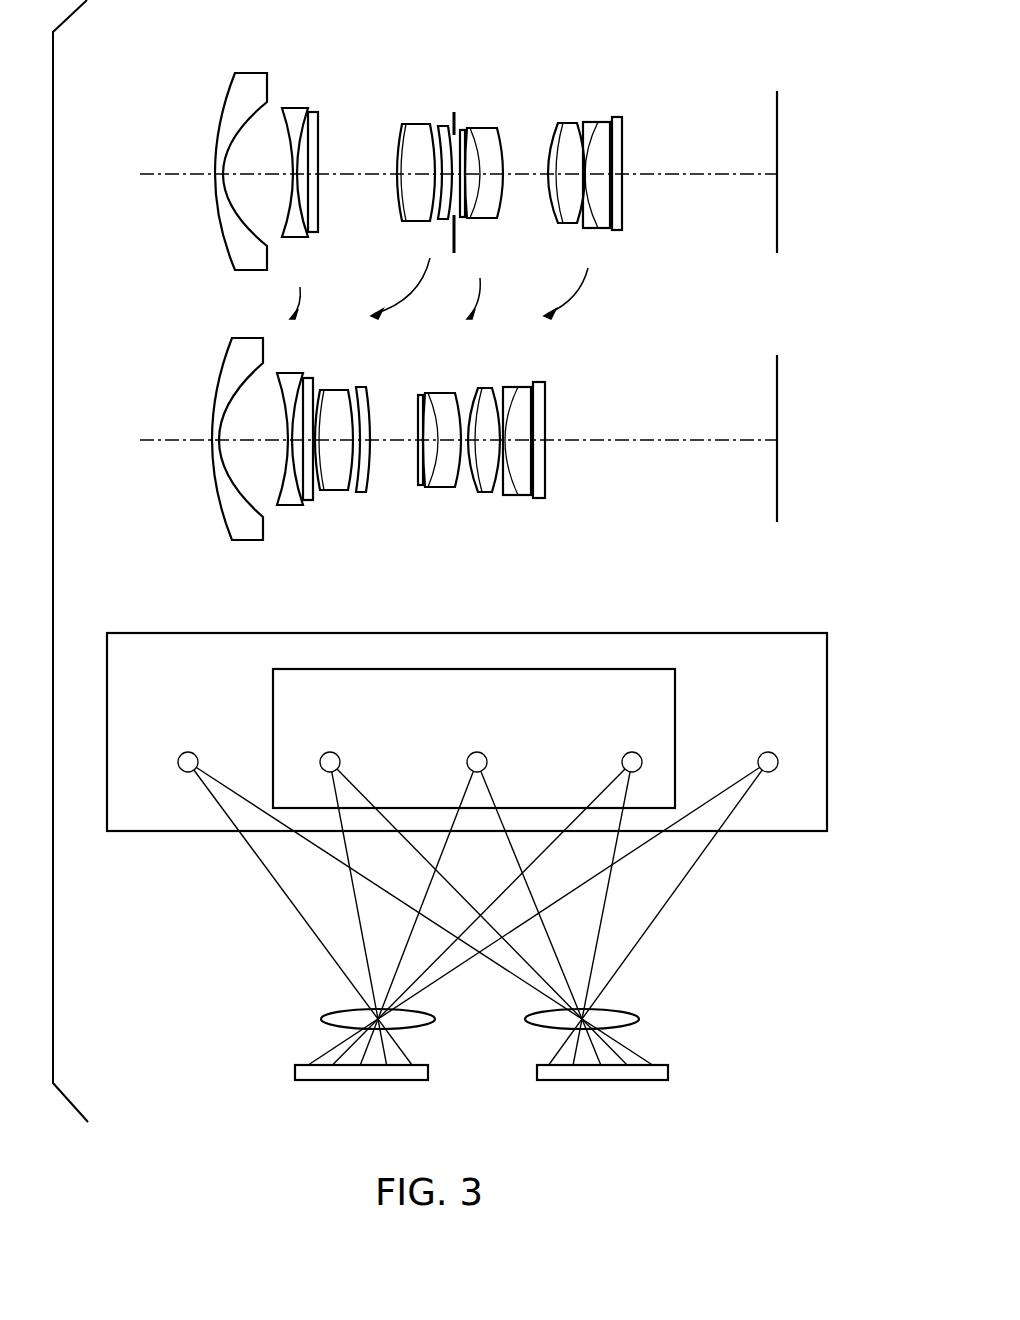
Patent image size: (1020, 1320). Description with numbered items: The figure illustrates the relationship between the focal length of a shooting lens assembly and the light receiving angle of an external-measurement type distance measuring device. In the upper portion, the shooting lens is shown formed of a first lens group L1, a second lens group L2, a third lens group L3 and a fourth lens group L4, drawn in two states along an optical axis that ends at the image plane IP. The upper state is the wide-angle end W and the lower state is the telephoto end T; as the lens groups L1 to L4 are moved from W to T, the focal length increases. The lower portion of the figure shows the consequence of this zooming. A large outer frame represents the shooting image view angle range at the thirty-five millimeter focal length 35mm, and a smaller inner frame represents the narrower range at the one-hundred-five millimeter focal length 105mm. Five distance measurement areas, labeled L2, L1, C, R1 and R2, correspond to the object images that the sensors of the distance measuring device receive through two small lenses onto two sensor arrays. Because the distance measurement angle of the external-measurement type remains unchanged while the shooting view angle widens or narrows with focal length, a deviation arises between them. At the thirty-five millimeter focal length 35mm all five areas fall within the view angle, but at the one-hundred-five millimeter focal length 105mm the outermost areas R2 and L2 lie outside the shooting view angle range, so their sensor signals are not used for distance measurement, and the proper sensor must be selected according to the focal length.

The first lens group L1 is at (221, 270).
The second lens group L2 is at (395, 222).
The third lens group L3 is at (452, 260).
The fourth lens group L4 is at (547, 233).
The image plane IP is at (777, 100).
The wide-angle end W is at (445, 174).
The telephoto end T is at (448, 440).
The center distance measurement area C is at (477, 748).
The right inner distance measurement area R1 is at (631, 748).
The right outer distance measurement area R2 is at (767, 748).
The 35 mm focal length view angle range 35mm is at (467, 732).
The 105 mm focal length view angle range 105mm is at (474, 738).